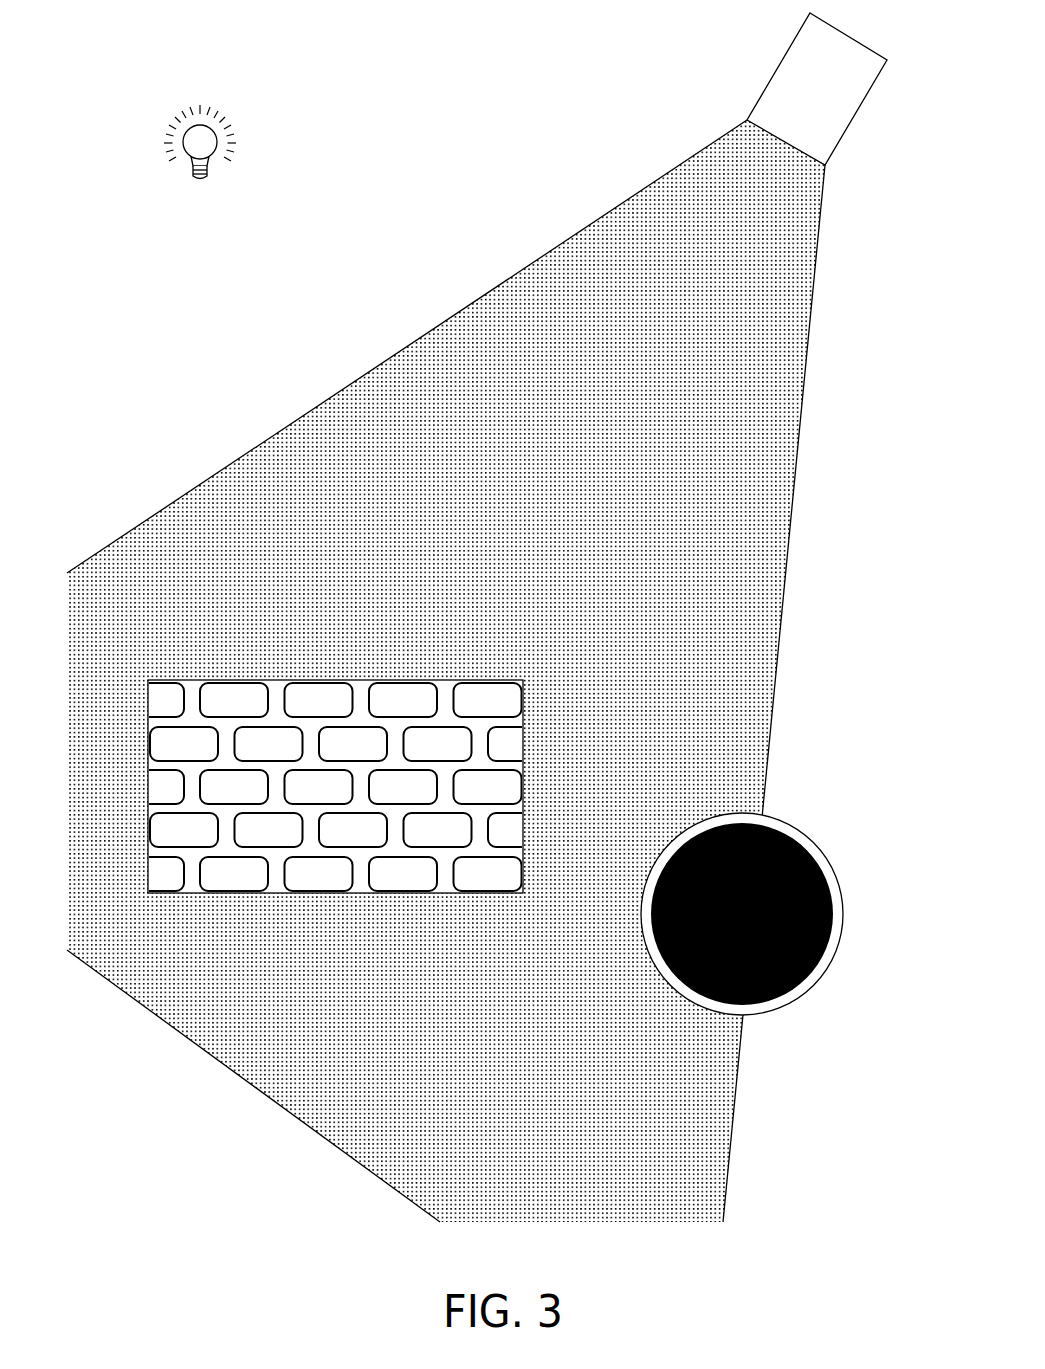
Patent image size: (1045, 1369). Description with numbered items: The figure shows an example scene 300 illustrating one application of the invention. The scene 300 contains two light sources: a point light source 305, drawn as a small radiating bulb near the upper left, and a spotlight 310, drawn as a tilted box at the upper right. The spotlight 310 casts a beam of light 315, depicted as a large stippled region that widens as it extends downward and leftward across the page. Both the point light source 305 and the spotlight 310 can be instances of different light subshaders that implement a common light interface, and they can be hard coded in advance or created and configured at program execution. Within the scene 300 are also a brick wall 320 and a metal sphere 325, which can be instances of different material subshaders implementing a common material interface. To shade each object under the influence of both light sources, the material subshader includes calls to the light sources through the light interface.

The scene 300 is at (477, 617).
The point light source 305 is at (218, 163).
The spotlight 310 is at (817, 89).
The beam of light 315 is at (597, 391).
The brick wall 320 is at (522, 758).
The metal sphere 325 is at (823, 850).